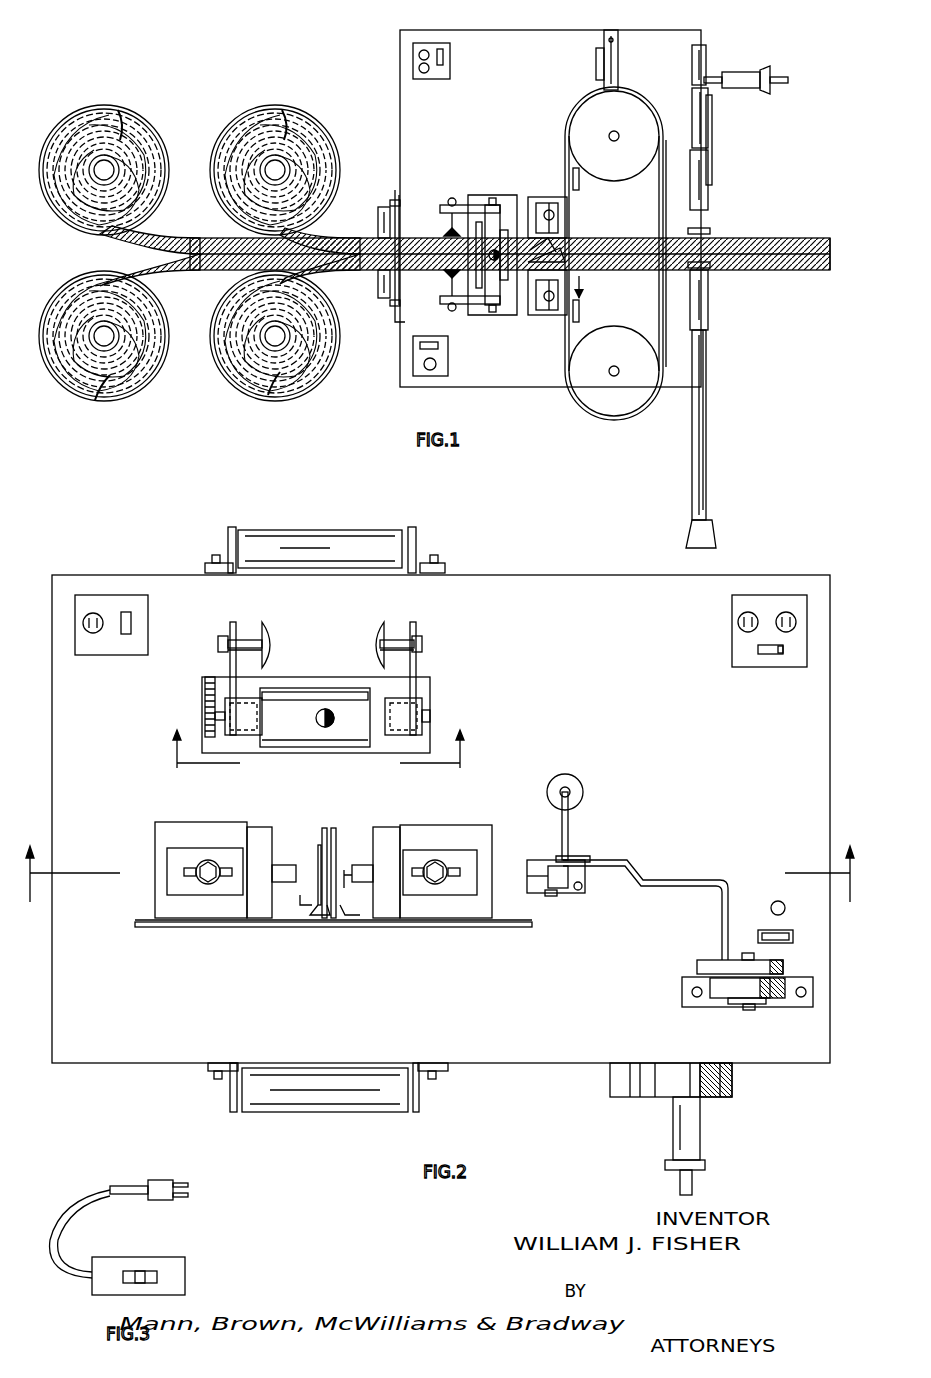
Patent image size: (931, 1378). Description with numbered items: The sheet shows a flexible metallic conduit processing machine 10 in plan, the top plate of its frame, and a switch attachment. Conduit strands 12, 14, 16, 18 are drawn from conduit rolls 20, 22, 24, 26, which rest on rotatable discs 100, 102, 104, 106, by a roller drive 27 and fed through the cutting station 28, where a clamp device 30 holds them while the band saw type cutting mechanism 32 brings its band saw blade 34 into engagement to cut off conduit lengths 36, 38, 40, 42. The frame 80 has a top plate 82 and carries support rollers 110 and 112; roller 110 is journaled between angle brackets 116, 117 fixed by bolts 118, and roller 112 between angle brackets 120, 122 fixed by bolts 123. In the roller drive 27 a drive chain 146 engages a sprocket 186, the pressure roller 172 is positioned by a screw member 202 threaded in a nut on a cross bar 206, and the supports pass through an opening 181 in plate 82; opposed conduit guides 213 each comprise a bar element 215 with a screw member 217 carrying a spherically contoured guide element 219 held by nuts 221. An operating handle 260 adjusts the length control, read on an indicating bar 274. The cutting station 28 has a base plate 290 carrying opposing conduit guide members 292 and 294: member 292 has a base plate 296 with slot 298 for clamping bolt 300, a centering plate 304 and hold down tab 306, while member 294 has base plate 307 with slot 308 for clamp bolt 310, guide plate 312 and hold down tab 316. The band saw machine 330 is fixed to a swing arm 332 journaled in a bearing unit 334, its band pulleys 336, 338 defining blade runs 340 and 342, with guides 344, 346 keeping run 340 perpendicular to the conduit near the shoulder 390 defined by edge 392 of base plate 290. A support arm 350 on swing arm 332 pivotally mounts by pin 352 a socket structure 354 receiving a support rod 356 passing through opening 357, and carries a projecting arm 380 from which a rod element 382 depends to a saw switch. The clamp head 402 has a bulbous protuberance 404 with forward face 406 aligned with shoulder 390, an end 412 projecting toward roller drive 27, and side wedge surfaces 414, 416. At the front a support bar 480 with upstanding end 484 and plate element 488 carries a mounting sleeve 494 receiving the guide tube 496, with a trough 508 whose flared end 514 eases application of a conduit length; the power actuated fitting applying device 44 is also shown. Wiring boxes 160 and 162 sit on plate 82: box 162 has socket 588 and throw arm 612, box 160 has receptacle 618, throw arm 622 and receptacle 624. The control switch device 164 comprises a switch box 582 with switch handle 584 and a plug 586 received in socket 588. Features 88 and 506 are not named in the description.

In FIG. 1, the flexible metallic conduit processing machine 10 is at (752, 55).
In FIG. 2, the flexible metallic conduit processing machine 10 is at (440, 875).
In FIG. 1, the conduit strand 12 is at (335, 238).
In FIG. 1, the conduit strand 14 is at (380, 206).
In FIG. 1, the conduit strand 16 is at (345, 270).
In FIG. 1, the conduit strand 18 is at (380, 298).
In FIG. 1, the conduit roll 20 is at (282, 112).
In FIG. 1, the conduit roll 22 is at (120, 112).
In FIG. 1, the conduit roll 24 is at (268, 392).
In FIG. 1, the conduit roll 26 is at (95, 400).
In FIG. 1, the roller drive 27 is at (480, 190).
In FIG. 2, the roller drive 27 is at (478, 660).
In FIG. 1, the cutting station 28 is at (535, 192).
In FIG. 2, the cutting station 28 is at (120, 926).
In FIG. 1, the clamp device 30 is at (575, 228).
In FIG. 1, the band saw type cutting mechanism 32 is at (612, 418).
In FIG. 2, the band saw type cutting mechanism 32 is at (810, 1028).
In FIG. 1, the band saw blade 34 is at (582, 288).
In FIG. 1, the conduit length 36 is at (775, 238).
In FIG. 1, the conduit length 38 is at (808, 238).
In FIG. 1, the conduit length 40 is at (786, 270).
In FIG. 1, the conduit length 42 is at (818, 270).
In FIG. 1, the power actuated fitting applying device 44 is at (780, 68).
In FIG. 2, the power actuated fitting applying device 44 is at (712, 1145).
In FIG. 1, the frame 80 is at (710, 45).
In FIG. 1, the top plate 82 is at (668, 42).
In FIG. 2, the top plate 82 is at (52, 1012).
In FIG. 1, the bearing block 88 is at (730, 115).
In FIG. 1, the disc 100 is at (250, 105).
In FIG. 1, the disc 102 is at (92, 105).
In FIG. 1, the disc 104 is at (312, 395).
In FIG. 1, the disc 106 is at (155, 385).
In FIG. 1, the support roller 110 is at (404, 200).
In FIG. 2, the support roller 110 is at (358, 525).
In FIG. 1, the support roller 112 is at (740, 315).
In FIG. 2, the support roller 112 is at (325, 1115).
In FIG. 1, the angle bracket 116 is at (395, 190).
In FIG. 2, the angle bracket 116 is at (418, 540).
In FIG. 1, the angle bracket 117 is at (405, 322).
In FIG. 2, the angle bracket 117 is at (232, 527).
In FIG. 2, the bolts 118 is at (214, 555).
In FIG. 1, the angle bracket 120 is at (712, 205).
In FIG. 2, the angle bracket 120 is at (419, 1112).
In FIG. 1, the angle bracket 122 is at (728, 320).
In FIG. 2, the angle bracket 122 is at (235, 1112).
In FIG. 2, the bolts 123 is at (212, 1080).
In FIG. 2, the drive chain 146 is at (208, 677).
In FIG. 2, the wiring box 160 is at (770, 598).
In FIG. 2, the wiring box 162 is at (105, 598).
In FIG. 3, the control switch device 164 is at (190, 1282).
In FIG. 2, the pressure roller 172 is at (338, 692).
In FIG. 2, the opening 181 is at (430, 745).
In FIG. 2, the sprocket 186 is at (212, 705).
In FIG. 2, the screw member 202 is at (320, 728).
In FIG. 2, the cross bar 206 is at (286, 700).
In FIG. 2, the conduit guides 213 is at (260, 622).
In FIG. 2, the bar element 215 is at (236, 645).
In FIG. 2, the screw member 217 is at (235, 640).
In FIG. 2, the spherically contoured guide element 219 is at (270, 650).
In FIG. 2, the nuts 221 is at (218, 642).
In FIG. 2, the operating handle 260 is at (785, 906).
In FIG. 2, the indicating bar 274 is at (795, 936).
In FIG. 2, the base plate 290 is at (478, 830).
In FIG. 2, the conduit guide member 292 is at (405, 848).
In FIG. 2, the conduit guide member 294 is at (243, 843).
In FIG. 2, the base plate 296 is at (470, 862).
In FIG. 2, the slot 298 is at (470, 880).
In FIG. 2, the clamping bolt 300 is at (440, 862).
In FIG. 2, the centering plate 304 is at (388, 827).
In FIG. 2, the hold down tab 306 is at (362, 865).
In FIG. 2, the base plate 307 is at (160, 850).
In FIG. 2, the slot 308 is at (195, 878).
In FIG. 2, the clamp bolt 310 is at (207, 880).
In FIG. 2, the guide plate 312 is at (258, 920).
In FIG. 2, the hold down tab 316 is at (285, 865).
In FIG. 1, the band saw machine 330 is at (648, 415).
In FIG. 1, the swing arm 332 is at (598, 70).
In FIG. 2, the swing arm 332 is at (735, 962).
In FIG. 2, the bearing unit 334 is at (720, 1008).
In FIG. 1, the band pulley 336 is at (640, 385).
In FIG. 1, the band pulley 338 is at (638, 118).
In FIG. 1, the band saw blade run 340 is at (568, 240).
In FIG. 2, the band saw blade run 340 is at (500, 928).
In FIG. 1, the band saw blade run 342 is at (665, 170).
In FIG. 1, the guide 344 is at (580, 312).
In FIG. 1, the guide 346 is at (580, 170).
In FIG. 2, the support arm 350 is at (690, 875).
In FIG. 2, the pin 352 is at (565, 888).
In FIG. 2, the socket structure 354 is at (583, 866).
In FIG. 2, the support rod 356 is at (552, 896).
In FIG. 2, the opening 357 is at (585, 890).
In FIG. 2, the projecting arm 380 is at (570, 820).
In FIG. 2, the rod element 382 is at (570, 792).
In FIG. 2, the shoulder 390 is at (375, 930).
In FIG. 2, the edge 392 is at (225, 928).
In FIG. 2, the head 402 is at (330, 828).
In FIG. 2, the bulbous protuberance 404 is at (333, 920).
In FIG. 2, the forward face 406 is at (342, 918).
In FIG. 2, the head end 412 is at (322, 845).
In FIG. 2, the wedge surface 414 is at (312, 916).
In FIG. 2, the wedge surface 416 is at (345, 925).
In FIG. 2, the support bar 480 is at (618, 1097).
In FIG. 2, the upstanding end 484 is at (730, 1097).
In FIG. 2, the plate element 488 is at (670, 1120).
In FIG. 1, the mounting sleeve 494 is at (712, 140).
In FIG. 1, the elongate tubular member 496 is at (706, 395).
In FIG. 1, the plunger rod 506 is at (706, 505).
In FIG. 1, the trough 508 is at (706, 470).
In FIG. 1, the trough end 514 is at (716, 545).
In FIG. 3, the switch box 582 is at (185, 1262).
In FIG. 3, the switch handle 584 is at (140, 1271).
In FIG. 3, the plug 586 is at (158, 1180).
In FIG. 2, the socket 588 is at (96, 640).
In FIG. 2, the throw arm 612 is at (127, 612).
In FIG. 2, the receptacle 618 is at (735, 633).
In FIG. 2, the throw arm 622 is at (780, 655).
In FIG. 2, the receptacle 624 is at (800, 615).